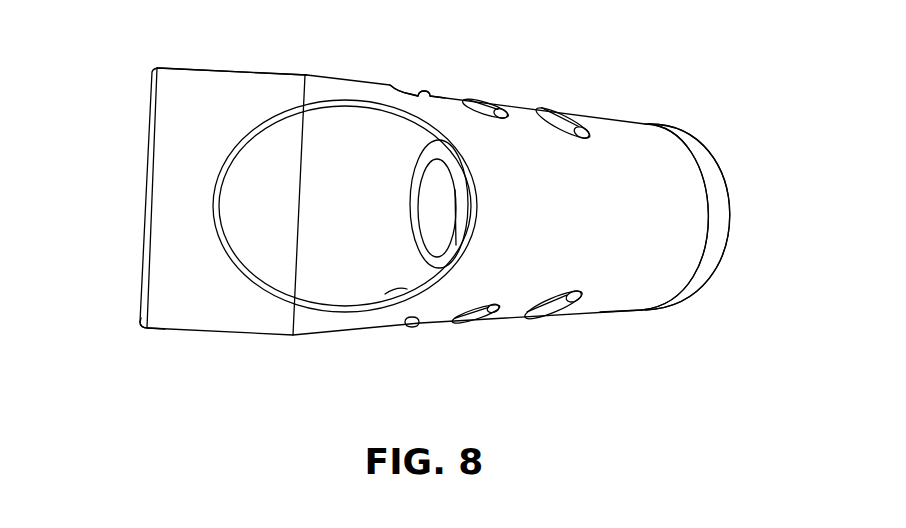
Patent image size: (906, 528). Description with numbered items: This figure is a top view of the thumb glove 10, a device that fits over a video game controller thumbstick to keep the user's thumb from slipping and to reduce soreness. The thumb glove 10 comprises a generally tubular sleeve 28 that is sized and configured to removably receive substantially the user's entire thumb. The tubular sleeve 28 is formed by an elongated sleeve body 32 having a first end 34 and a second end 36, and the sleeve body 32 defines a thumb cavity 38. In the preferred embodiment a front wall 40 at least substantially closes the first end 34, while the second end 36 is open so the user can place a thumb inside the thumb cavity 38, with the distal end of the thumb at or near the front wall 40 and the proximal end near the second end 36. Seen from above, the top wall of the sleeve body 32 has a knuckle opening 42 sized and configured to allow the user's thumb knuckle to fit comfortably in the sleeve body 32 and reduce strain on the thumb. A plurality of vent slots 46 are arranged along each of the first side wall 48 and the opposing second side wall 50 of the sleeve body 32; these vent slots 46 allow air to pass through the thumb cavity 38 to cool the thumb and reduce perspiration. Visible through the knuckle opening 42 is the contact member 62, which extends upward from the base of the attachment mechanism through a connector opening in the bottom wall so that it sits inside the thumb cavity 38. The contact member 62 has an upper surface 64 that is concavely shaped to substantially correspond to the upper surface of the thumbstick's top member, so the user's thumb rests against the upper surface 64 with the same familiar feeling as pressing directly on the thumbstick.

The thumb glove 10 is at (667, 110).
The tubular sleeve 28 is at (185, 113).
The sleeve body 32 is at (662, 172).
The first end 34 is at (692, 312).
The second end 36 is at (143, 338).
The thumb cavity 38 is at (135, 202).
The front wall 40 is at (722, 220).
The knuckle opening 42 is at (338, 153).
The vent slots 46 is at (560, 117).
The first side wall 48 is at (297, 340).
The second side wall 50 is at (443, 80).
The contact member 62 is at (432, 180).
The upper surface 64 is at (463, 209).